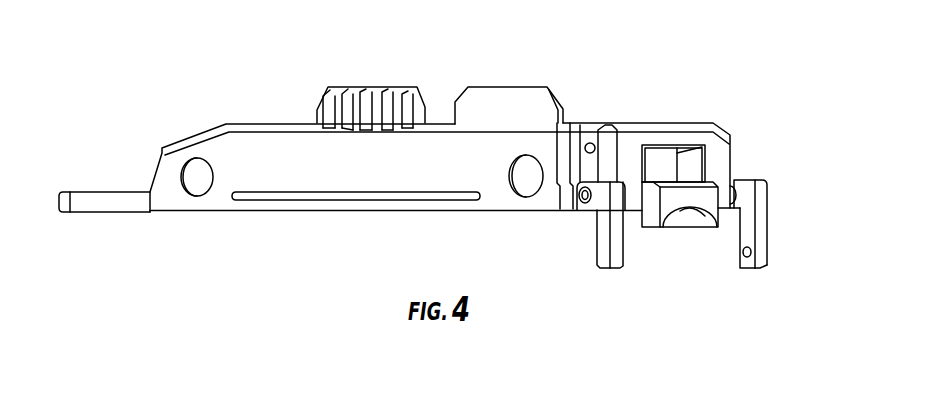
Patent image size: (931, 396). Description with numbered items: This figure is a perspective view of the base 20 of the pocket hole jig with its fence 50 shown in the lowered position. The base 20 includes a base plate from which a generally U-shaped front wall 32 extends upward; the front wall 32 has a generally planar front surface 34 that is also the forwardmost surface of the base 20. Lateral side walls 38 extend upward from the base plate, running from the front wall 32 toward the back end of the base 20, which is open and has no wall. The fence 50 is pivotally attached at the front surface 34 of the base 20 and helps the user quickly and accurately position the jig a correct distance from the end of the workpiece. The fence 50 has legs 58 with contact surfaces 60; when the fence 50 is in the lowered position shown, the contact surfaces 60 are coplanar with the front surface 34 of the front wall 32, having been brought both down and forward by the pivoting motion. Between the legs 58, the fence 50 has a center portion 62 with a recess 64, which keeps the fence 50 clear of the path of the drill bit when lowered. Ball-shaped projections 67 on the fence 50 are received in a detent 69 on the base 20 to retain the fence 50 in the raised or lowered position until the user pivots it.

The base 20 is at (255, 150).
The front wall 32 is at (608, 125).
The front surface 34 is at (630, 152).
The lateral side walls 38 is at (298, 178).
The fence 50 is at (762, 180).
The legs 58 is at (625, 239).
The contact surfaces 60 is at (596, 235).
The center portion 62 is at (711, 184).
The recess 64 is at (710, 228).
The ball-shaped projections 67 is at (750, 260).
The detent 69 is at (589, 143).